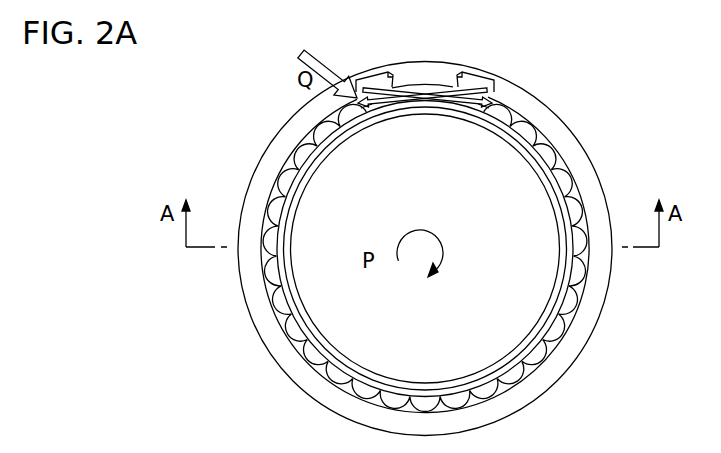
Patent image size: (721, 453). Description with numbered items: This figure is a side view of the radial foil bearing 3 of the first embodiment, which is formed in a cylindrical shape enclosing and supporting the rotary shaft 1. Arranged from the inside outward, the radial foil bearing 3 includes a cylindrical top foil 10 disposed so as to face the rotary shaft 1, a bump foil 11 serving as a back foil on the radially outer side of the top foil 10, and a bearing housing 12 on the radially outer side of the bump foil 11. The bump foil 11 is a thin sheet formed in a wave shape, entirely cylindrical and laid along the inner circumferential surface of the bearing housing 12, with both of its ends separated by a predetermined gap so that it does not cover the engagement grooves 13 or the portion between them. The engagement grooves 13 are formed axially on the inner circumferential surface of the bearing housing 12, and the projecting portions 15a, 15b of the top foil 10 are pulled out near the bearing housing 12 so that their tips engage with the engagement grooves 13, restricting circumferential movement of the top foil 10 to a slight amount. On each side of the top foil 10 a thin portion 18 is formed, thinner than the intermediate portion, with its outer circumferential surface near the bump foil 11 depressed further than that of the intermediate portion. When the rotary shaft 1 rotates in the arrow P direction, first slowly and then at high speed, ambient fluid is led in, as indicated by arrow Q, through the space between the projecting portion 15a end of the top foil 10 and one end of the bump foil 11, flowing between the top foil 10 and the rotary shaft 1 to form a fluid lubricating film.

The rotary shaft 1 is at (527, 289).
The radial foil bearing 3 is at (541, 80).
The top foil 10 is at (530, 139).
The bump foil 11 is at (563, 173).
The bearing housing 12 is at (592, 195).
The engagement grooves 13 is at (389, 72).
The projecting portion 15a is at (380, 80).
The projecting portion 15b is at (477, 80).
The thin portion 18 is at (370, 112).